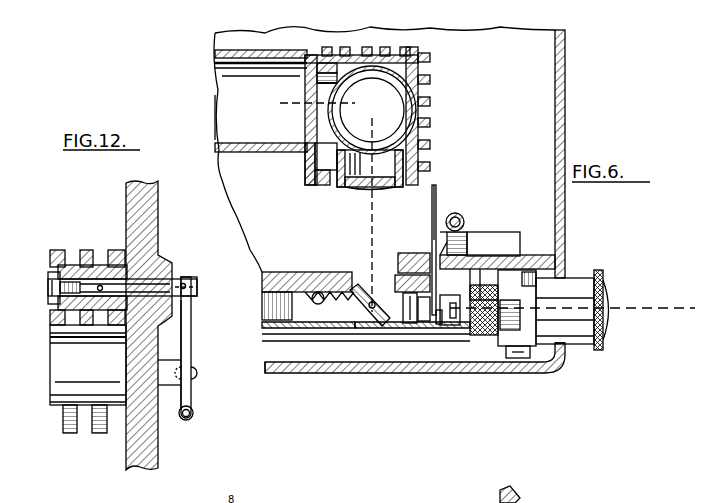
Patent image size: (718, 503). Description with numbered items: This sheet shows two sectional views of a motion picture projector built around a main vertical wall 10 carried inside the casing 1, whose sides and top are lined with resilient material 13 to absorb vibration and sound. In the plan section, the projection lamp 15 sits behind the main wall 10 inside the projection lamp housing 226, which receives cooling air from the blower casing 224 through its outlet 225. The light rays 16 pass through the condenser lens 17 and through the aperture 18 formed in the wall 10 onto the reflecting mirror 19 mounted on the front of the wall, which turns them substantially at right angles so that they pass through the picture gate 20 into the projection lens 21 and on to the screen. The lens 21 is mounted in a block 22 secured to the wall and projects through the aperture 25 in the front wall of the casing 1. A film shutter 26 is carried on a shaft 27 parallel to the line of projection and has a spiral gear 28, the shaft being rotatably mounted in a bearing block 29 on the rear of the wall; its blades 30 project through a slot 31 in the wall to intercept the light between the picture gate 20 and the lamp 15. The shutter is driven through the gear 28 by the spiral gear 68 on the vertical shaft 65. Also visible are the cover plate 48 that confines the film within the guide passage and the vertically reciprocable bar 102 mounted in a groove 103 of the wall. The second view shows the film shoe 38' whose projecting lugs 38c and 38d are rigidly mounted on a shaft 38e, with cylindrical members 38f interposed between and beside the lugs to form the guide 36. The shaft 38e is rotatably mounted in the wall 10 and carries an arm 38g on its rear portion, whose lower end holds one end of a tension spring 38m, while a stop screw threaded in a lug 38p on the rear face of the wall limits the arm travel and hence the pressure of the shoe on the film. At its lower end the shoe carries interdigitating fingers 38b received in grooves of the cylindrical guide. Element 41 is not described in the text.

In FIG. 6, the casing 1 is at (570, 144).
In FIG. 12, the main vertical wall 10 is at (160, 210).
In FIG. 6, the main vertical wall 10 is at (315, 272).
In FIG. 12, the resilient material lining 13 is at (199, 358).
In FIG. 6, the projection lamp 15 is at (383, 107).
In FIG. 6, the light rays 16 is at (370, 218).
In FIG. 6, the condenser lens 17 is at (384, 190).
In FIG. 6, the aperture 18 is at (357, 272).
In FIG. 6, the reflecting mirror 19 is at (366, 306).
In FIG. 6, the picture gate 20 is at (438, 322).
In FIG. 6, the projection lens 21 is at (574, 282).
In FIG. 6, the block 22 is at (525, 318).
In FIG. 6, the aperture 25 is at (568, 352).
In FIG. 6, the film shutter 26 is at (431, 236).
In FIG. 6, the shaft 27 is at (469, 233).
In FIG. 6, the spiral gear 28 is at (467, 248).
In FIG. 6, the bearing block 29 is at (516, 232).
In FIG. 6, the blades 30 is at (431, 195).
In FIG. 6, the slot 31 is at (432, 258).
In FIG. 12, the guide 36 is at (48, 266).
In FIG. 12, the film shoe 38' is at (88, 365).
In FIG. 12, the interdigitating fingers 38b is at (93, 434).
In FIG. 12, the projecting lug 38c is at (73, 255).
In FIG. 12, the projecting lug 38d is at (101, 253).
In FIG. 12, the shaft 38e is at (155, 283).
In FIG. 12, the cylindrical members 38f is at (60, 250).
In FIG. 12, the arm 38g is at (185, 339).
In FIG. 12, the tension spring 38m is at (194, 413).
In FIG. 12, the lug 38p is at (198, 379).
In FIG. 6, the guide 41 is at (410, 326).
In FIG. 6, the cover plate 48 is at (322, 332).
In FIG. 6, the vertical shaft 65 is at (455, 213).
In FIG. 6, the spiral gear 68 is at (462, 221).
In FIG. 6, the vertically reciprocable bar 102 is at (466, 270).
In FIG. 6, the groove 103 is at (497, 255).
In FIG. 6, the blower casing 224 is at (246, 58).
In FIG. 6, the outlet 225 is at (275, 111).
In FIG. 6, the projection lamp housing 226 is at (428, 100).